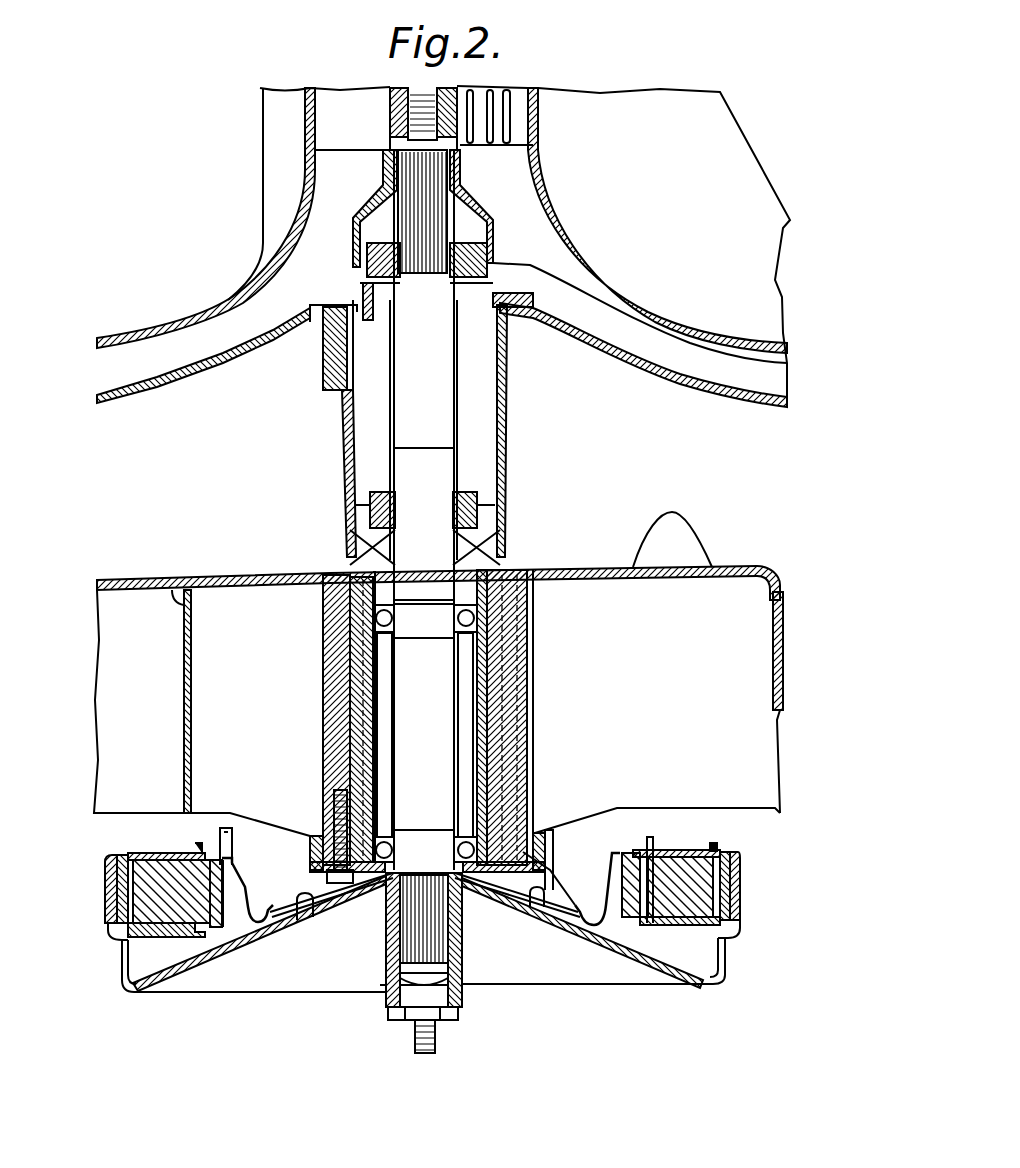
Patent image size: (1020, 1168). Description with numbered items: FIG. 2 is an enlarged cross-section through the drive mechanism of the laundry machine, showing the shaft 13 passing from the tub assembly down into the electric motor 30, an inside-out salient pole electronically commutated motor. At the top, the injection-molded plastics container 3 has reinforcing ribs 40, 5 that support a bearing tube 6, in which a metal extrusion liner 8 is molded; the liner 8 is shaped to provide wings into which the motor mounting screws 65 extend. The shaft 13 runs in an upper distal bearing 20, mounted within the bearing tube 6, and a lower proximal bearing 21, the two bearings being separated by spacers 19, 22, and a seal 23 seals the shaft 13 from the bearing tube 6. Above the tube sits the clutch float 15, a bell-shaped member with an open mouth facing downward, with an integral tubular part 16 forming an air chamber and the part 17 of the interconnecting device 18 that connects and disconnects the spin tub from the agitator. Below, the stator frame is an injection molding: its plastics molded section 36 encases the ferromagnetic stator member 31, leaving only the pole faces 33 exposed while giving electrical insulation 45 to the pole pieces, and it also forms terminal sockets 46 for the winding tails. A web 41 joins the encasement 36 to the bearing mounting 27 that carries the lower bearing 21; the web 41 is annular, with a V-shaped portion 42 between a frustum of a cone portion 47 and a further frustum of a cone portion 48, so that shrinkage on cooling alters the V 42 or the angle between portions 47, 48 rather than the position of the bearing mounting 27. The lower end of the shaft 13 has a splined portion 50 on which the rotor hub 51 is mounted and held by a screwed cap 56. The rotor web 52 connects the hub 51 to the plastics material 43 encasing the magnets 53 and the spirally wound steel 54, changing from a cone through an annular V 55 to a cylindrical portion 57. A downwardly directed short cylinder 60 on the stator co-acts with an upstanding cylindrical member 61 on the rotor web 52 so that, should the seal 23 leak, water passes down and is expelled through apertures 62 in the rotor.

The container 3 is at (215, 578).
The reinforcing rib 5 is at (178, 606).
The bearing tube 6 is at (325, 618).
The extrusion liner 8 is at (345, 680).
The shaft 13 is at (410, 741).
The float 15 is at (680, 460).
The tubular part 16 is at (507, 415).
The part of interconnecting device 17 is at (485, 285).
The interconnecting device 18 is at (497, 213).
The spacer 19 is at (458, 672).
The upper distal bearing 20 is at (467, 553).
The lower proximal bearing 21 is at (467, 837).
The spacer 22 is at (478, 648).
The seal 23 is at (375, 566).
The bearing mounting 27 is at (373, 890).
The electric motor 30 is at (690, 1033).
The stator member 31 is at (123, 853).
The pole faces 33 is at (115, 915).
The plastics molded section 36 is at (220, 830).
The tub cavity 40 is at (241, 663).
The web 41 is at (283, 925).
The V shaped portion 42 is at (252, 935).
The plastics material 43 is at (130, 993).
The electrical insulation 45 is at (147, 853).
The terminal sockets 46 is at (236, 852).
The frustum of a cone portion 47 is at (272, 915).
The further frustum of a cone portion 48 is at (222, 912).
The splined portion 50 is at (458, 940).
The hub 51 is at (388, 994).
The web 52 is at (675, 978).
The magnet 53 is at (113, 888).
The steel 54 is at (113, 907).
The annular V 55 is at (713, 982).
The screwed cap 56 is at (458, 1018).
The cylindrical portion 57 is at (122, 962).
The short cylinder 60 is at (337, 995).
The upstanding cylindrical member 61 is at (530, 920).
The apertures 62 is at (303, 925).
The motor mounting screws 65 is at (334, 808).